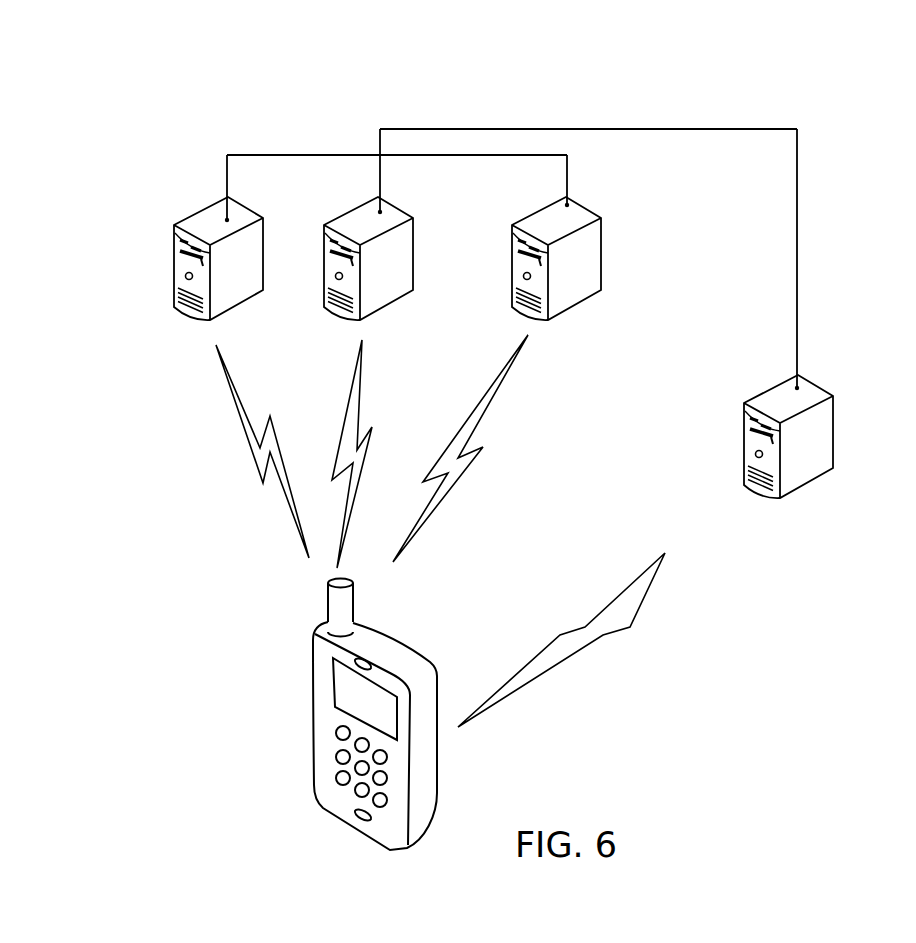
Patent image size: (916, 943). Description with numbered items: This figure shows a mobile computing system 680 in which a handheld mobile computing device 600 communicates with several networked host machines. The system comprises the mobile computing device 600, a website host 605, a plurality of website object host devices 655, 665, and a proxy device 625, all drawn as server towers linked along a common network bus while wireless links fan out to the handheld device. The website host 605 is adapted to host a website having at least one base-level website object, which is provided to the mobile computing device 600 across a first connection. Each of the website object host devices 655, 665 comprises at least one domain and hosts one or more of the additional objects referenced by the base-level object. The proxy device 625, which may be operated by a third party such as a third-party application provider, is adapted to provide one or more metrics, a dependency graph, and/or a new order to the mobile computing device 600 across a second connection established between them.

The mobile computing system 680 is at (137, 141).
The website object host devices 655 is at (253, 256).
The website host 605 is at (402, 257).
The server 665 is at (590, 257).
The proxy device 625 is at (823, 432).
The mobile computing device 600 is at (313, 745).